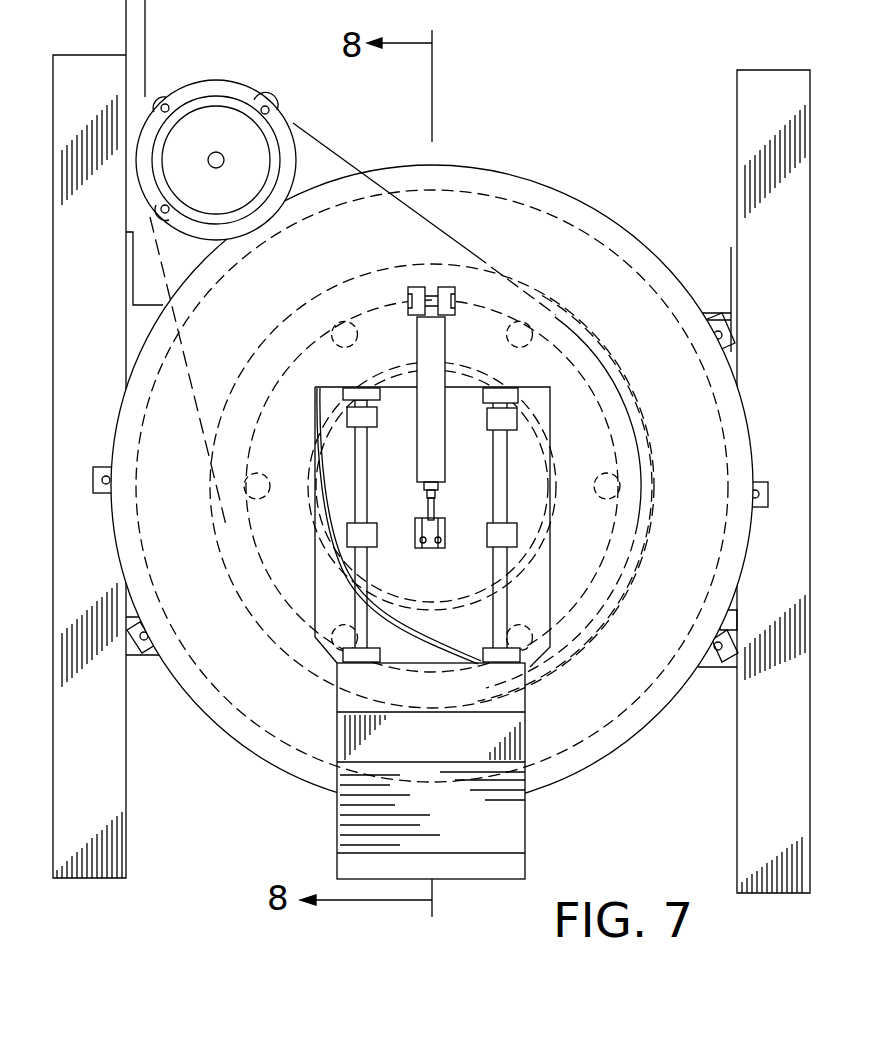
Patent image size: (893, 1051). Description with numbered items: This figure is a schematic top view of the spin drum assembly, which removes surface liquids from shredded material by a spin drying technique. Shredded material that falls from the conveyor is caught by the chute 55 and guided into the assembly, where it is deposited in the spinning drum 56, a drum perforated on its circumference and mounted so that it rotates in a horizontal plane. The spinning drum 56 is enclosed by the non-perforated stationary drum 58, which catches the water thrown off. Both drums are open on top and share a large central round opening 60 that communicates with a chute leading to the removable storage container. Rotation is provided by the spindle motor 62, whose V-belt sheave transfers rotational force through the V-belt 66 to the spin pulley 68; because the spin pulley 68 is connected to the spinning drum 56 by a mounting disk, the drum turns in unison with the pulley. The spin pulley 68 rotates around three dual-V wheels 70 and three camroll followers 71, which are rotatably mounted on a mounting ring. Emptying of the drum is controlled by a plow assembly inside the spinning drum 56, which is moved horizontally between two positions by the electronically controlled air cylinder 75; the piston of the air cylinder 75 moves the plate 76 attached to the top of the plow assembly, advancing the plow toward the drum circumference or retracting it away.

The chute 55 is at (525, 838).
The spinning drum 56 is at (492, 190).
The stationary drum 58 is at (588, 205).
The central round opening 60 is at (482, 384).
The spindle motor 62 is at (197, 127).
The V-belt 66 is at (322, 140).
The spin pulley 68 is at (337, 277).
The dual-V wheels 70 is at (605, 488).
The camroll followers 71 is at (521, 332).
The air cylinder 75 is at (424, 340).
The plate 76 is at (537, 580).